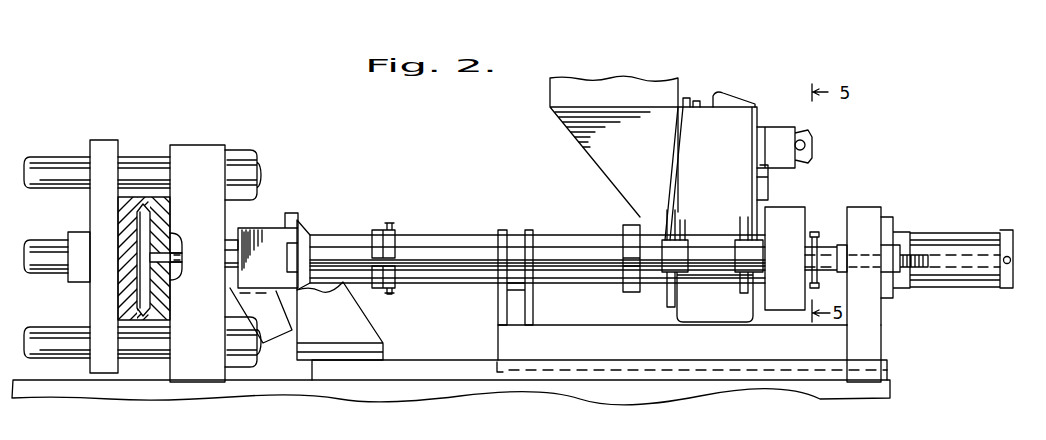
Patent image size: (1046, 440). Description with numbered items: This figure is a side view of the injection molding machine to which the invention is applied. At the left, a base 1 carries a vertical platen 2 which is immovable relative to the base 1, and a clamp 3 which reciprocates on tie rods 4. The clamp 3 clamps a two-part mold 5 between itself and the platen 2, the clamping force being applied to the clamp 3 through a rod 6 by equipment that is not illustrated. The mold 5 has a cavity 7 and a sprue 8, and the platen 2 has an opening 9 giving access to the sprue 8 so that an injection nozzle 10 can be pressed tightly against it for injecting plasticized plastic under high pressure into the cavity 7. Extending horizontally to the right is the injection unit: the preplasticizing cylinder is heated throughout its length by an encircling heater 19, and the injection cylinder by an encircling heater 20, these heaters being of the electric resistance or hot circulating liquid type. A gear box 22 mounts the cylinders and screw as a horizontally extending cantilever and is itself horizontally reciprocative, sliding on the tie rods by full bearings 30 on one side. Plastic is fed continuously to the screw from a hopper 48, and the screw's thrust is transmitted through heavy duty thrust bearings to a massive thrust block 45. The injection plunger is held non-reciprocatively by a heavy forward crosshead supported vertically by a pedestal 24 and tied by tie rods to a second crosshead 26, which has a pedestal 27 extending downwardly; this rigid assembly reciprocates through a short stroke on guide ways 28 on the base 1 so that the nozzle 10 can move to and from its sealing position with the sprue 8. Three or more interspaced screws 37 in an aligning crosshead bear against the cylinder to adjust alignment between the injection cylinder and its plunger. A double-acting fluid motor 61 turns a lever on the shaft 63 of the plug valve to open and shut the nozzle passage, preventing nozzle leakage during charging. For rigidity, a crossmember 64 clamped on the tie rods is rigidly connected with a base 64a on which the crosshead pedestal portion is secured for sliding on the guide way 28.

The base 1 is at (891, 393).
The vertical platen 2 is at (207, 146).
The clamp 3 is at (108, 141).
The tie rods 4 is at (53, 167).
The two-part mold 5 is at (127, 200).
The rod 6 is at (49, 252).
The cavity 7 is at (147, 300).
The sprue 8 is at (166, 244).
The opening 9 is at (179, 263).
The injection nozzle 10 is at (176, 257).
The heater 19 is at (468, 237).
The heater 20 is at (338, 236).
The gear box 22 is at (730, 189).
The pedestal 24 is at (361, 328).
The second crosshead 26 is at (863, 213).
The pedestal 27 is at (872, 310).
The guide ways 28 is at (911, 368).
The full bearings 30 is at (742, 275).
The screws 37 is at (395, 293).
The thrust block 45 is at (795, 216).
The hopper 48 is at (646, 161).
The double-acting fluid motor 61 is at (292, 316).
The shaft 63 is at (230, 306).
The crossmember 64 is at (528, 290).
The base 64a is at (632, 348).